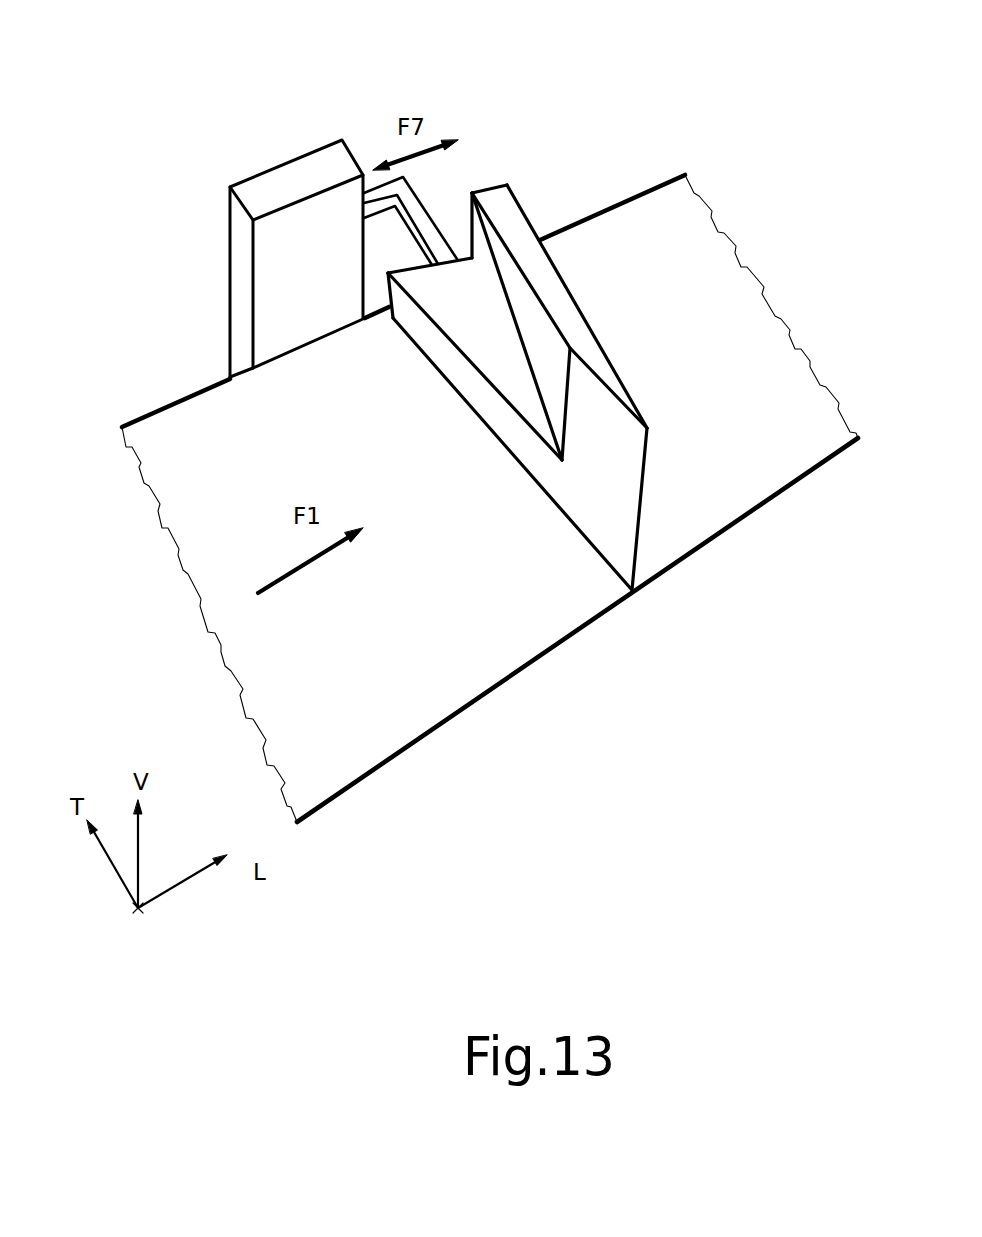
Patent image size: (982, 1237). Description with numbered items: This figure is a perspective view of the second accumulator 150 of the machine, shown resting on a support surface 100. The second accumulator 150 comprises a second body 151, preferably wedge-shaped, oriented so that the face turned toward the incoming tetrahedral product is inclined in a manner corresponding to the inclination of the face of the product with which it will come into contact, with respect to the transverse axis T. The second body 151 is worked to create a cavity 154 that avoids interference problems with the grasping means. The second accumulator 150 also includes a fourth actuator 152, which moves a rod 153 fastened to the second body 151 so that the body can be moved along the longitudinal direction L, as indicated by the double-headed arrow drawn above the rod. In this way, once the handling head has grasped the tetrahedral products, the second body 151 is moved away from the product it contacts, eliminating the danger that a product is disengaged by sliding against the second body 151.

The conveyor belt / support surface 100 is at (731, 346).
The second accumulator 150 is at (460, 322).
The second body 151 is at (623, 517).
The fourth actuator 152 is at (326, 260).
The rod 153 is at (408, 198).
The cavity 154 is at (500, 332).